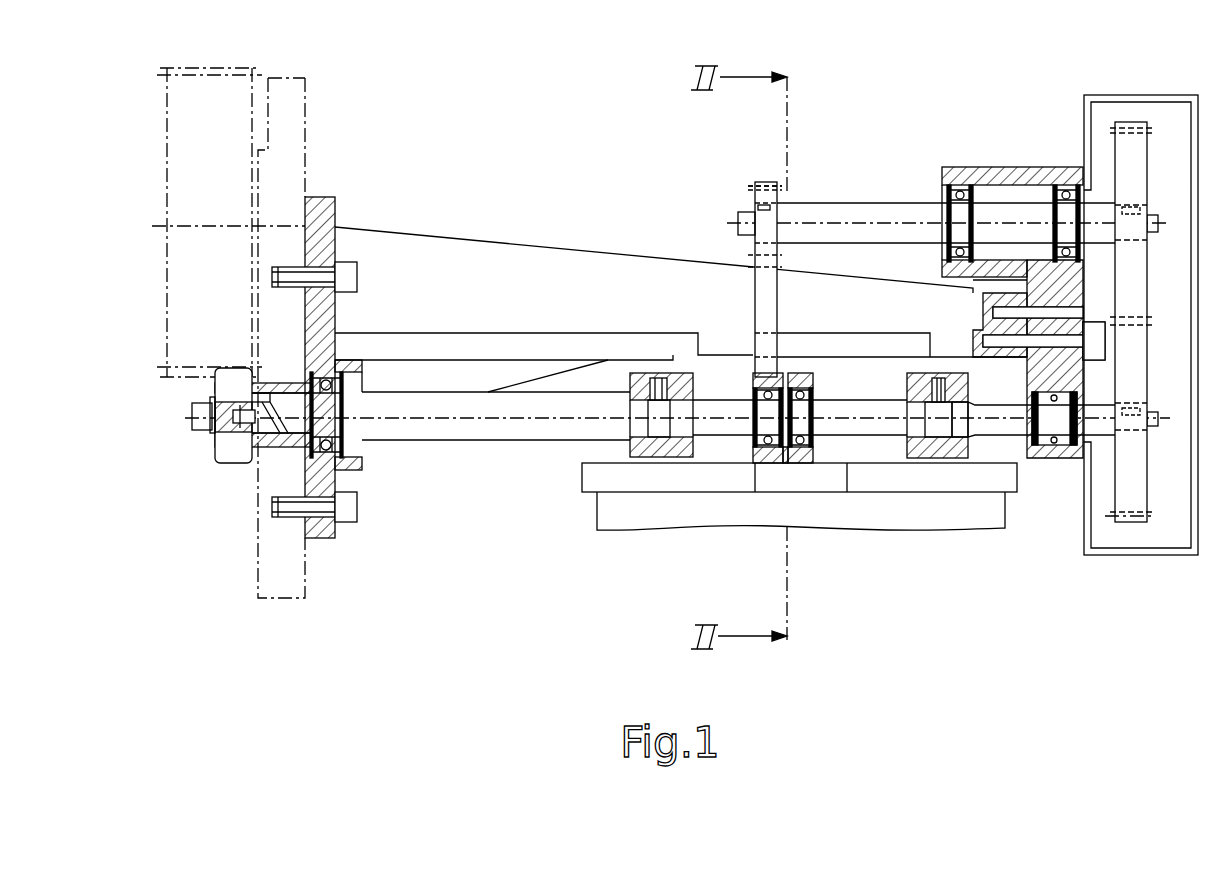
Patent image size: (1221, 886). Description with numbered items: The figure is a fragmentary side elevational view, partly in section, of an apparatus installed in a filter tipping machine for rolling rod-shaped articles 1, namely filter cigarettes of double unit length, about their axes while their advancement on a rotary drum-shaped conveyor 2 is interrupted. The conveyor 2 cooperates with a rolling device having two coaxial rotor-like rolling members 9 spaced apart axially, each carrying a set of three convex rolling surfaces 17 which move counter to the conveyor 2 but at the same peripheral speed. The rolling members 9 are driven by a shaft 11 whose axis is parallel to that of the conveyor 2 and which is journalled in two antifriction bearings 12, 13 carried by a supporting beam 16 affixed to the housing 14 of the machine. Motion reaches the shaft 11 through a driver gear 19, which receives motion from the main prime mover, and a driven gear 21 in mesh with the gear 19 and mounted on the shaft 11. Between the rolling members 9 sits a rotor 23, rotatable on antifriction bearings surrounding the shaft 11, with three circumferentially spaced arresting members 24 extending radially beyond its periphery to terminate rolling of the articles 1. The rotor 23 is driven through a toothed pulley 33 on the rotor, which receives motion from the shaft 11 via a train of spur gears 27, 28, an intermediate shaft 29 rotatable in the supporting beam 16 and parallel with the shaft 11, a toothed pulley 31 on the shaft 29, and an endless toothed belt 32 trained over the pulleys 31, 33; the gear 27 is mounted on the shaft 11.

The rod-shaped article 1 is at (783, 495).
The rotary drum-shaped conveyor 2 is at (881, 512).
The rolling member 9 is at (630, 448).
The shaft 11 is at (480, 430).
The antifriction bearing 12 is at (362, 463).
The antifriction bearing 13 is at (1062, 458).
The housing 14 is at (306, 88).
The supporting beam 16 is at (418, 258).
The convex rolling surface 17 is at (645, 373).
The driver gear 19 is at (210, 100).
The driven gear 21 is at (234, 463).
The rotor 23 is at (800, 373).
The arresting member 24 is at (803, 458).
The spur gear 27 is at (1132, 480).
The spur gear 28 is at (1133, 160).
The intermediate shaft 29 is at (860, 218).
The toothed pulley 31 is at (768, 183).
The endless toothed belt 32 is at (762, 305).
The toothed pulley 33 is at (752, 452).